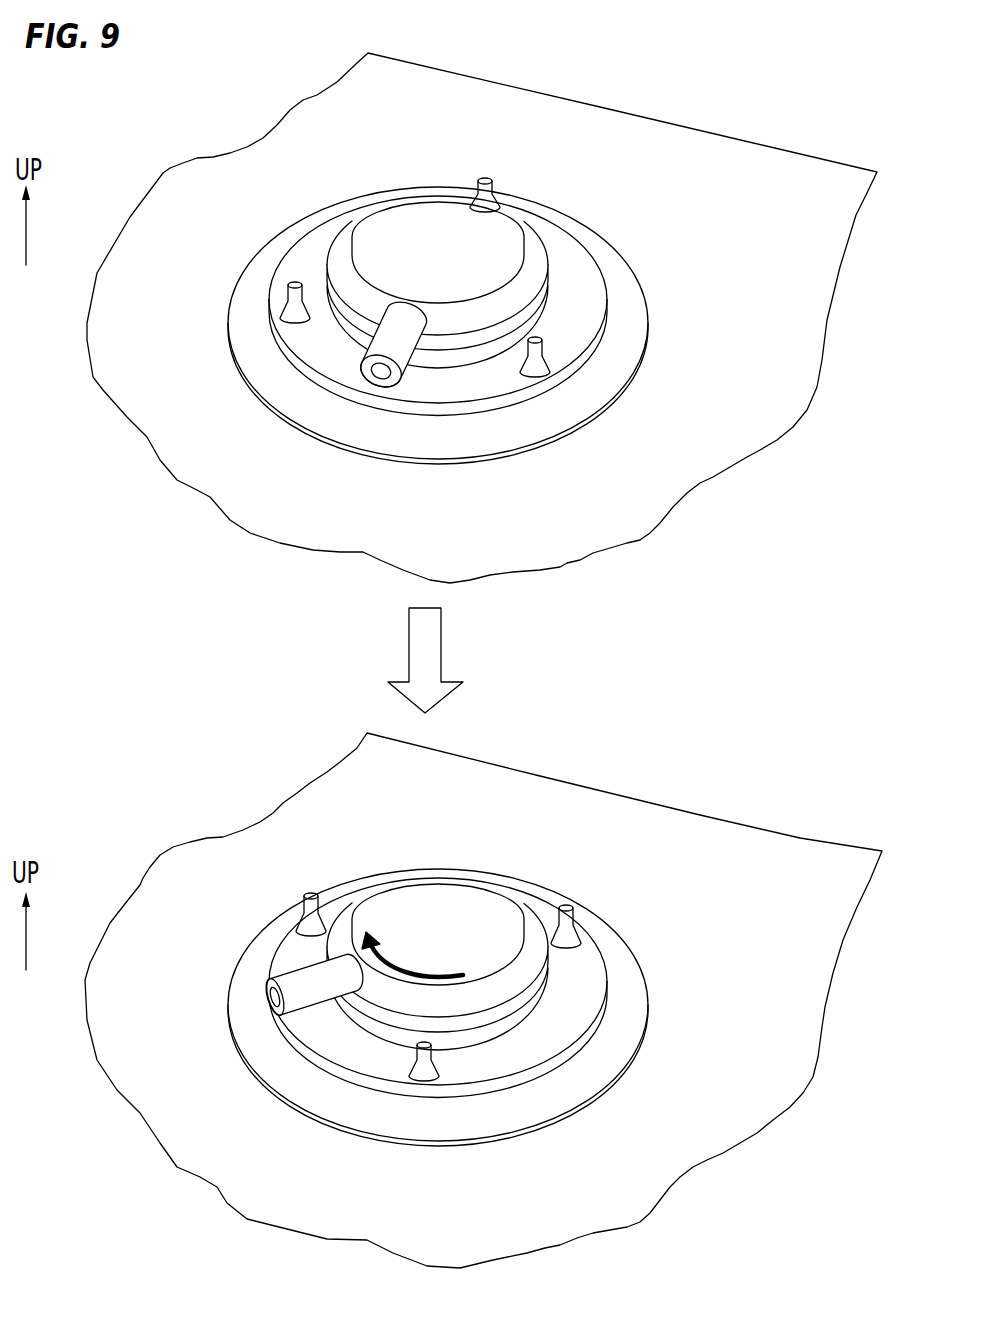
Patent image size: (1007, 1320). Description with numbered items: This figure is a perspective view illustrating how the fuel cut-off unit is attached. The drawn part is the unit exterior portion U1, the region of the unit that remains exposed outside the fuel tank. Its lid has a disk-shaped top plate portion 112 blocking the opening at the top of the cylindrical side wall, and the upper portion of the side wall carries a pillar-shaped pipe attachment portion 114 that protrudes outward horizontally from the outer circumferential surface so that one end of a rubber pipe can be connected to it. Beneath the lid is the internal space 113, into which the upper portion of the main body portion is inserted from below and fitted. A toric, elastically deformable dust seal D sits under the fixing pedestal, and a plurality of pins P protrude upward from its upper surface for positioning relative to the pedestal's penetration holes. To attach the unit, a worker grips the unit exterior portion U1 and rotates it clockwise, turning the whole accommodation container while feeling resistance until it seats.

The top plate portion 112 is at (408, 218).
The internal space 113 is at (582, 267).
The pipe attachment portion 114 is at (367, 340).
The pins P is at (485, 177).
The dust seal D is at (628, 318).
The unit exterior portion U1 is at (583, 203).